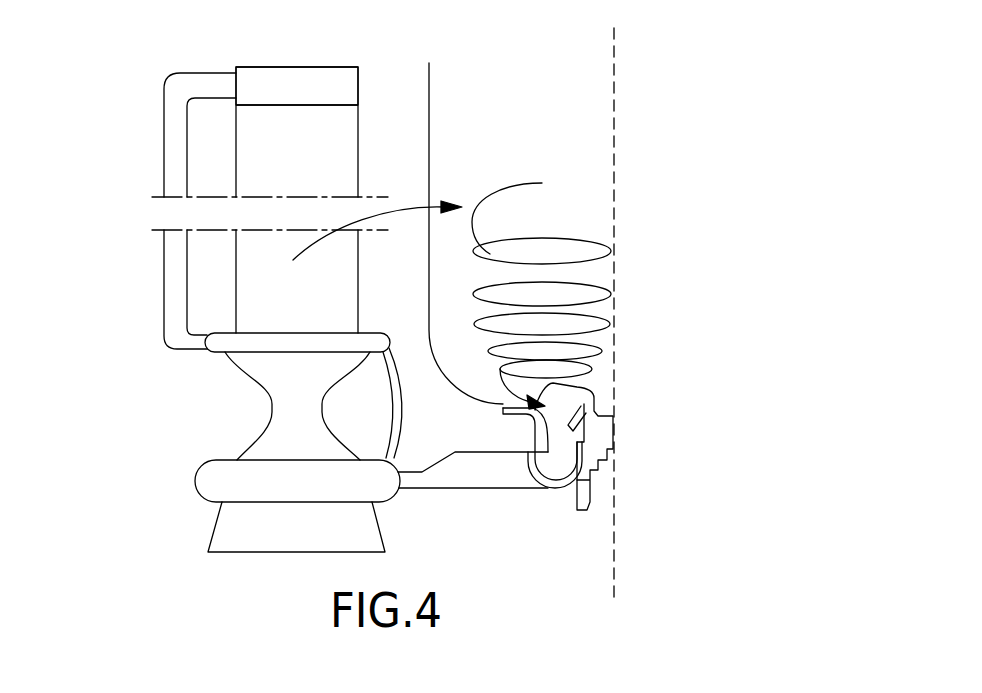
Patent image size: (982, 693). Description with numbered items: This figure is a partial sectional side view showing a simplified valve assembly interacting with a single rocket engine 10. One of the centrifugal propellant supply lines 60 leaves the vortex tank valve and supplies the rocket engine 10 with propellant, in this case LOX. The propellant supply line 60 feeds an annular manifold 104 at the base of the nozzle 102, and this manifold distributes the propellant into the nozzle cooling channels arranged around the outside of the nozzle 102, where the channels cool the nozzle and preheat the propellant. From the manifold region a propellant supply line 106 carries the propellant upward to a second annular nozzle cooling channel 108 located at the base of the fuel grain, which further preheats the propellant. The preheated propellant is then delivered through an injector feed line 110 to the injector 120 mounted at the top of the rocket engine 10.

The rocket engine 10 is at (309, 156).
The injector 120 is at (296, 67).
The injector feed line 110 is at (164, 153).
The second annular nozzle cooling channel 108 is at (293, 353).
The nozzle 102 is at (250, 438).
The annular manifold 104 is at (195, 482).
The propellant supply line 106 is at (403, 415).
The centrifugal propellant supply line 60 is at (455, 490).